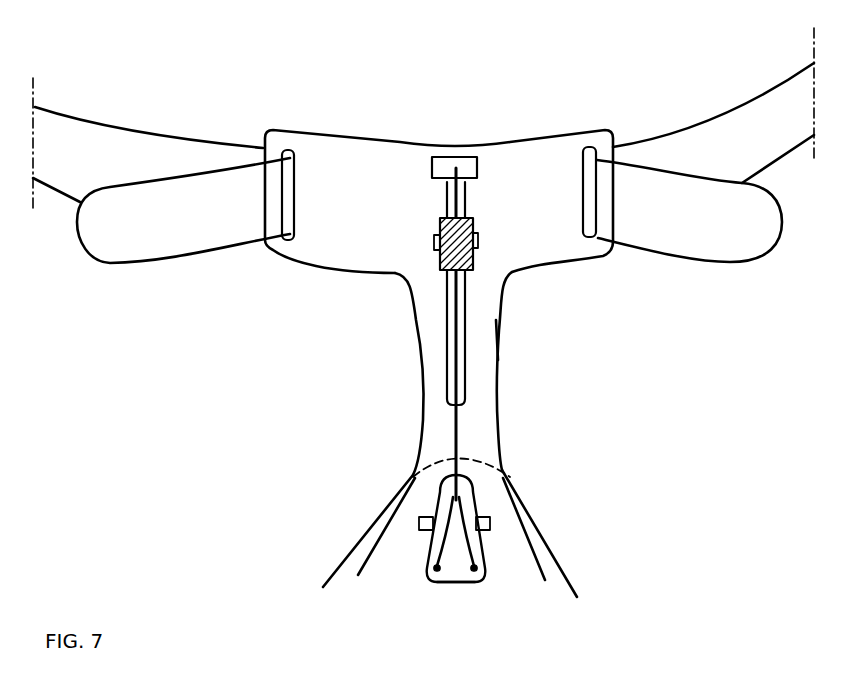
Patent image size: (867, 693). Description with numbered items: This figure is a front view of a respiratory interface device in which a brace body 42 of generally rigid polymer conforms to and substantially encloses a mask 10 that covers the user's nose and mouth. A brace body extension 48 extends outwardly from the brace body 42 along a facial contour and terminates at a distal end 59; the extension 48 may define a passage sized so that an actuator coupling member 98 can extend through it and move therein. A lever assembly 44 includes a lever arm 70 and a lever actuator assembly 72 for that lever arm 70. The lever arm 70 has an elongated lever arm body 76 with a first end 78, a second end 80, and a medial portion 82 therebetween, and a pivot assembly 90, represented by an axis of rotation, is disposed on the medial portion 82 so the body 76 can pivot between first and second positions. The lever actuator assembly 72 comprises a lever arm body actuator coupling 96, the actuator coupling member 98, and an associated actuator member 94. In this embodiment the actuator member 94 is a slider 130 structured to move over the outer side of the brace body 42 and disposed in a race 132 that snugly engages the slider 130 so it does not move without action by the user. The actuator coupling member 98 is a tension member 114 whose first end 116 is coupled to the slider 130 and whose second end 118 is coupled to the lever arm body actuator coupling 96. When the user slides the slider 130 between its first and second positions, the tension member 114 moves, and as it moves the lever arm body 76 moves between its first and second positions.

The mask 10 is at (535, 543).
The brace body 42 is at (380, 512).
The lever assembly 44 is at (580, 437).
The brace body extension 48 is at (497, 393).
The distal end 59 is at (402, 158).
The lever arm 70 is at (423, 565).
The lever actuator assembly 72 is at (453, 123).
The lever arm body 76 is at (483, 538).
The first end 78 is at (452, 583).
The second end 80 is at (470, 483).
The medial portion 82 is at (425, 550).
The pivot assembly 90 is at (492, 522).
The actuator member 94 is at (473, 223).
The lever arm body actuator coupling 96 is at (467, 581).
The actuator coupling member 98 is at (452, 420).
The tension member 114 is at (452, 448).
The tension member first end 116 is at (447, 205).
The tension member second end 118 is at (480, 557).
The slider 130 is at (447, 270).
The race 132 is at (465, 340).